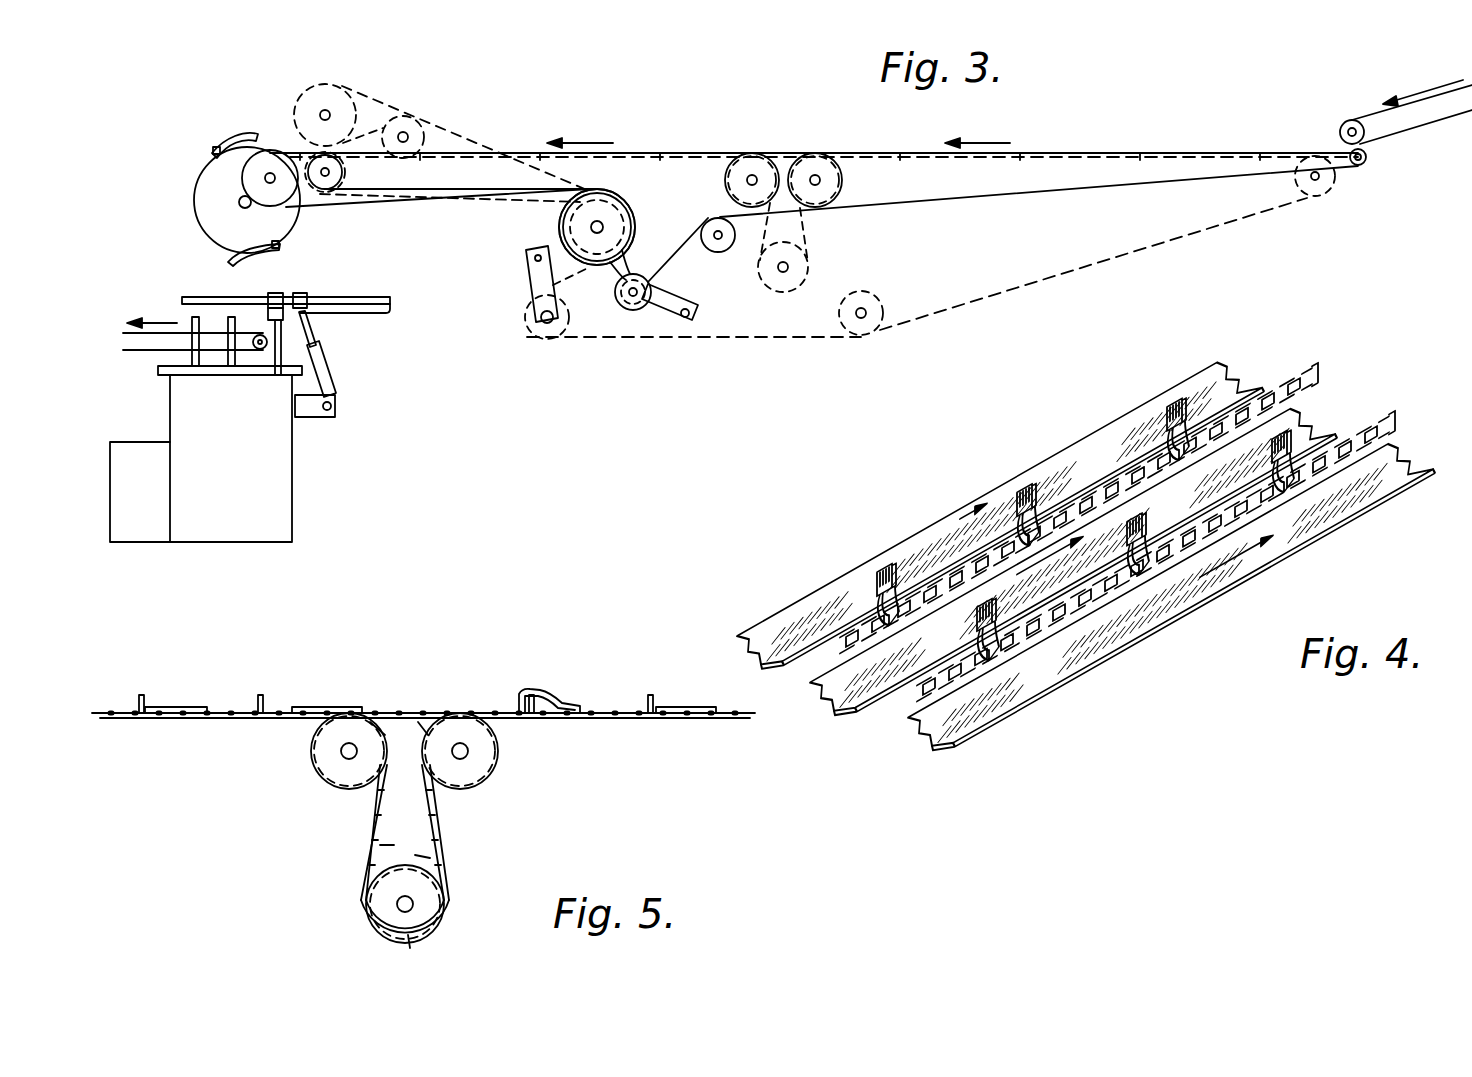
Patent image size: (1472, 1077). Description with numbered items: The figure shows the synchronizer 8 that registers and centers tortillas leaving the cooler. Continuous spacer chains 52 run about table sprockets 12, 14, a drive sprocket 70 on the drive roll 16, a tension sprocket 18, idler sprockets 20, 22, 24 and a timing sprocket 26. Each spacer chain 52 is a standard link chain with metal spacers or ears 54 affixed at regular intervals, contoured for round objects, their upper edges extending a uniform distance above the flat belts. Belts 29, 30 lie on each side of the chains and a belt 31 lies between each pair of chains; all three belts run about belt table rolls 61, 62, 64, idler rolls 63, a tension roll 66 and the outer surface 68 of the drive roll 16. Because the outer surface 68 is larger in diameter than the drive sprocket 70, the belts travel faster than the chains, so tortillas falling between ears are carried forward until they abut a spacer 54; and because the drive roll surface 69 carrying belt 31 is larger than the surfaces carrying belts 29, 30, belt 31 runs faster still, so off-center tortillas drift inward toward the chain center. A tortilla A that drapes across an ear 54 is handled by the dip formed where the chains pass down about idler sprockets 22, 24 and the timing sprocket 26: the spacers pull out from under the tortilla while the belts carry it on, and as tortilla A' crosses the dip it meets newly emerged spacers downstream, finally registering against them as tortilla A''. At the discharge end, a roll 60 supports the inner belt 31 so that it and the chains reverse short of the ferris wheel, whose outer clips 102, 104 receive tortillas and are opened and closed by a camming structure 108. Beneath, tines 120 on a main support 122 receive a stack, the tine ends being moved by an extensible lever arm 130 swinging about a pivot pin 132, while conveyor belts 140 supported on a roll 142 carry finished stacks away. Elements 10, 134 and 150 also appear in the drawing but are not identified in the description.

In FIG. 3, the synchronizer 8 is at (1106, 272).
In FIG. 5, the conveyor chain loop 10 is at (441, 871).
In FIG. 3, the table sprocket 12 is at (1323, 193).
In FIG. 3, the table sprocket 14 is at (300, 190).
In FIG. 3, the drive roll 16 is at (570, 225).
In FIG. 3, the tension sprocket 18 is at (553, 345).
In FIG. 3, the idler sprocket 20 is at (862, 335).
In FIG. 3, the idler sprocket 22 is at (735, 165).
In FIG. 5, the idler sprocket 22 is at (323, 761).
In FIG. 3, the idler sprocket 24 is at (835, 189).
In FIG. 5, the idler sprocket 24 is at (476, 767).
In FIG. 3, the timing sprocket 26 is at (805, 270).
In FIG. 5, the timing sprocket 26 is at (386, 920).
In FIG. 4, the belt 29 is at (1113, 642).
In FIG. 3, the belt 30 is at (866, 153).
In FIG. 4, the belt 30 is at (773, 598).
In FIG. 5, the belt 30 is at (422, 713).
In FIG. 4, the belt 31 is at (857, 680).
In FIG. 3, the spacer chain 52 is at (1190, 153).
In FIG. 4, the spacer chain 52 is at (1303, 382).
In FIG. 5, the spacer chain 52 is at (601, 720).
In FIG. 3, the spacer 54 is at (1240, 152).
In FIG. 4, the spacer 54 is at (1008, 489).
In FIG. 5, the spacer 54 is at (260, 695).
In FIG. 3, the roll 60 is at (268, 150).
In FIG. 3, the belt table roll 61 is at (241, 178).
In FIG. 3, the belt table roll 62 is at (1367, 160).
In FIG. 3, the idler roll 63 is at (716, 252).
In FIG. 3, the belt table roll 64 is at (346, 176).
In FIG. 3, the tension roll 66 is at (633, 312).
In FIG. 3, the outer surface of drive roll 68 is at (612, 196).
In FIG. 3, the drive roll surface 69 is at (634, 232).
In FIG. 3, the drive sprocket 70 is at (624, 216).
In FIG. 3, the outer clip 102 is at (236, 140).
In FIG. 3, the outer clip 104 is at (230, 253).
In FIG. 3, the camming structure 108 is at (196, 192).
In FIG. 3, the tines 120 is at (206, 296).
In FIG. 3, the main support 122 is at (279, 362).
In FIG. 3, the extensible lever arm 130 is at (318, 333).
In FIG. 3, the pivot pin 132 is at (340, 407).
In FIG. 3, the guide posts 134 is at (232, 365).
In FIG. 3, the conveyor belts 140 is at (163, 330).
In FIG. 3, the roll 142 is at (258, 352).
In FIG. 3, the base housing 150 is at (315, 412).
In FIG. 5, the tortilla A is at (617, 671).
In FIG. 5, the tortilla A' is at (327, 674).
In FIG. 5, the tortilla A'' is at (181, 677).